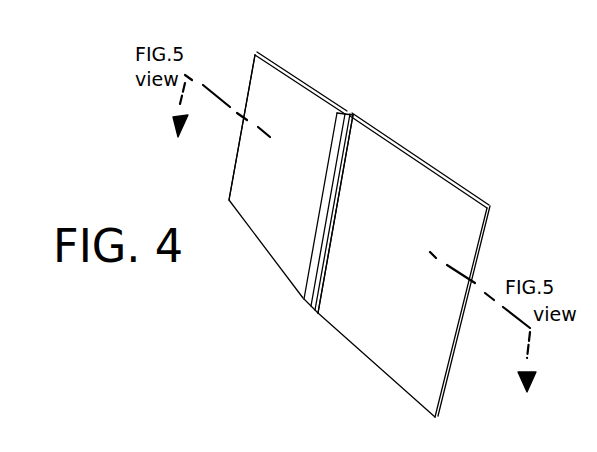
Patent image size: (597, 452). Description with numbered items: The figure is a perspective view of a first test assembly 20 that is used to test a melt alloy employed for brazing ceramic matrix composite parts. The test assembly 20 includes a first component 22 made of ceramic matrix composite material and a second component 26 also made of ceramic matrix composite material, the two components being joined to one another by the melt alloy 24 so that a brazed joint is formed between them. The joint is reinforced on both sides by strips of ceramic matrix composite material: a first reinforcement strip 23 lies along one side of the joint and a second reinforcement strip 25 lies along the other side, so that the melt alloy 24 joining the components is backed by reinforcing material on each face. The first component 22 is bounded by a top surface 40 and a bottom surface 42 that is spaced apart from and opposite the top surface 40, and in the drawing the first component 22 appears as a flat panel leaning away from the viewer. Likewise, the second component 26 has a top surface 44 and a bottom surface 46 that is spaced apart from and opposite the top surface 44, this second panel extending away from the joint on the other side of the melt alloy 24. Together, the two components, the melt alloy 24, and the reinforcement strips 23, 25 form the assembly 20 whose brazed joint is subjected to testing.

The test assembly 20 is at (438, 99).
The first component 22 is at (273, 87).
The first reinforcement strip 23 is at (317, 250).
The melt alloy 24 is at (318, 313).
The second reinforcement strip 25 is at (352, 115).
The second component 26 is at (467, 208).
The top surface 40 is at (313, 93).
The bottom surface 42 is at (257, 165).
The top surface 44 is at (430, 163).
The bottom surface 46 is at (367, 187).